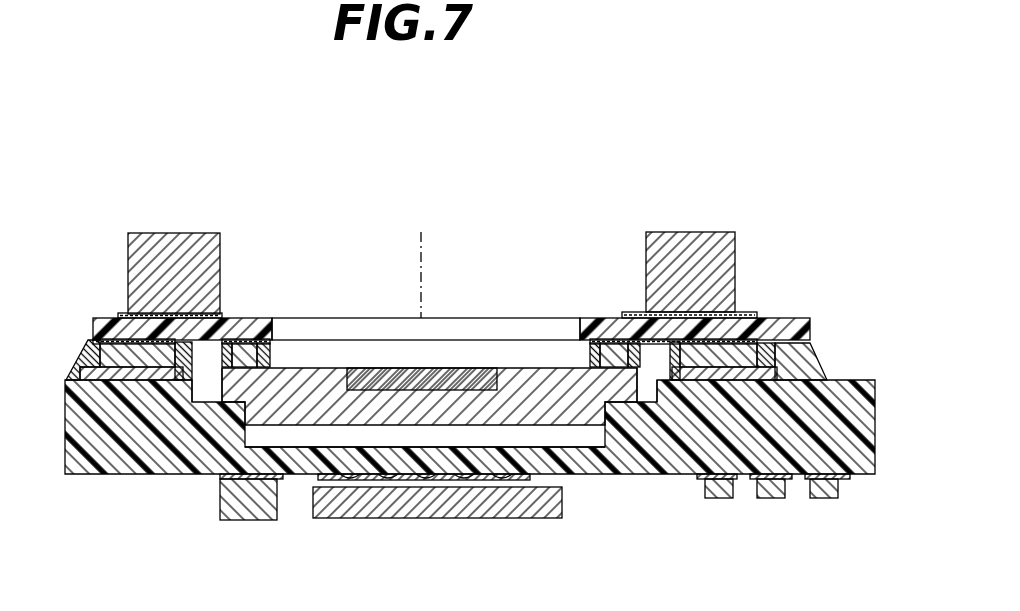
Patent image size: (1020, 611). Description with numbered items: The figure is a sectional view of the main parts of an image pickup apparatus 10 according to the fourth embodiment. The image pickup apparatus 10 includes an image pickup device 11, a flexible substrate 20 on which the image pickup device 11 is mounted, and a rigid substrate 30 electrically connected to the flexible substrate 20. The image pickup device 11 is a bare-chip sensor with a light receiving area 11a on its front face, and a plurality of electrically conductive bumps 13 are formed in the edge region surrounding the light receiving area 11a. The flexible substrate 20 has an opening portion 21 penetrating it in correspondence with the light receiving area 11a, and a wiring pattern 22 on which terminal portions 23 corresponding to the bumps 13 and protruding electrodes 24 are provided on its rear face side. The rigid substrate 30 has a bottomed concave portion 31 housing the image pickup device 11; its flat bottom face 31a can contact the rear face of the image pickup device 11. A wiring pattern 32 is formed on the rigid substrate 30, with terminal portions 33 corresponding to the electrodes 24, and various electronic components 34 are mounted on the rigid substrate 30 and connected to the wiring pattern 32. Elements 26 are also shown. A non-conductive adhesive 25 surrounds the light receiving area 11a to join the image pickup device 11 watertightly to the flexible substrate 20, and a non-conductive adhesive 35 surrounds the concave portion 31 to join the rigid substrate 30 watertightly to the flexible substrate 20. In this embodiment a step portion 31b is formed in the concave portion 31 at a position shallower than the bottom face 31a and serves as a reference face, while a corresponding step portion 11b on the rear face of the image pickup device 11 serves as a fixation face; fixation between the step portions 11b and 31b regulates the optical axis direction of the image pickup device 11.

The image pickup apparatus 10 is at (490, 208).
The image pickup device 11 is at (358, 356).
The light receiving area 11a is at (459, 368).
The step portion 11b is at (227, 402).
The electrically conductive bumps 13 is at (243, 350).
The flexible substrate 20 is at (272, 310).
The opening portion 21 is at (570, 326).
The wiring pattern 22 is at (225, 340).
The terminal portions 23 is at (272, 362).
The electrodes 24 is at (110, 357).
The non-conductive adhesive 25 is at (270, 353).
The terminal block 26 is at (163, 245).
The rigid substrate 30 is at (93, 486).
The concave portion 31 is at (610, 405).
The bottom face 31a is at (532, 442).
The step portion 31b is at (200, 393).
The wiring pattern 32 is at (285, 482).
The terminal portions 33 is at (95, 378).
The electronic components 34 is at (250, 512).
The non-conductive adhesive 35 is at (88, 345).